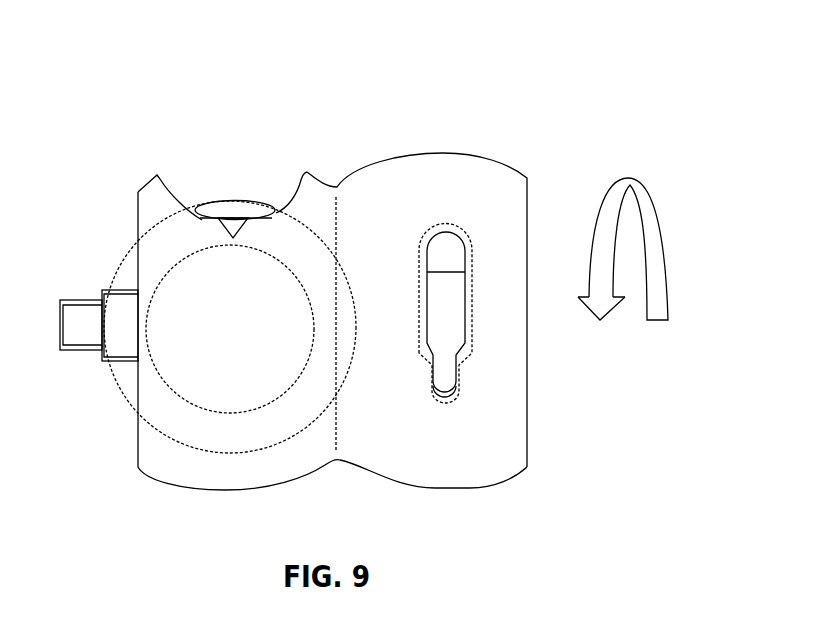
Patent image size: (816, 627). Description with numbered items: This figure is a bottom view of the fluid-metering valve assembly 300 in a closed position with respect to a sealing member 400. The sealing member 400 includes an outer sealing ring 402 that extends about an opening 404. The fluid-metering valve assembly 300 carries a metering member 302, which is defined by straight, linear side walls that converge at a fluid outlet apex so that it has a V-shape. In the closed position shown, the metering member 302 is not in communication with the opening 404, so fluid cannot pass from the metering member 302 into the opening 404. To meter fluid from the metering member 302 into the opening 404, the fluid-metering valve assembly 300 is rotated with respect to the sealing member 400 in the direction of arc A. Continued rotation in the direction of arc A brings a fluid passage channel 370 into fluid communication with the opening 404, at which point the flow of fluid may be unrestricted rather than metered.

The fluid-metering valve assembly 300 is at (509, 113).
The metering member 302 is at (246, 205).
The fluid passage channel 370 is at (170, 182).
The sealing member 400 is at (232, 200).
The outer sealing ring 402 is at (128, 252).
The opening 404 is at (212, 280).
The arc A is at (667, 252).